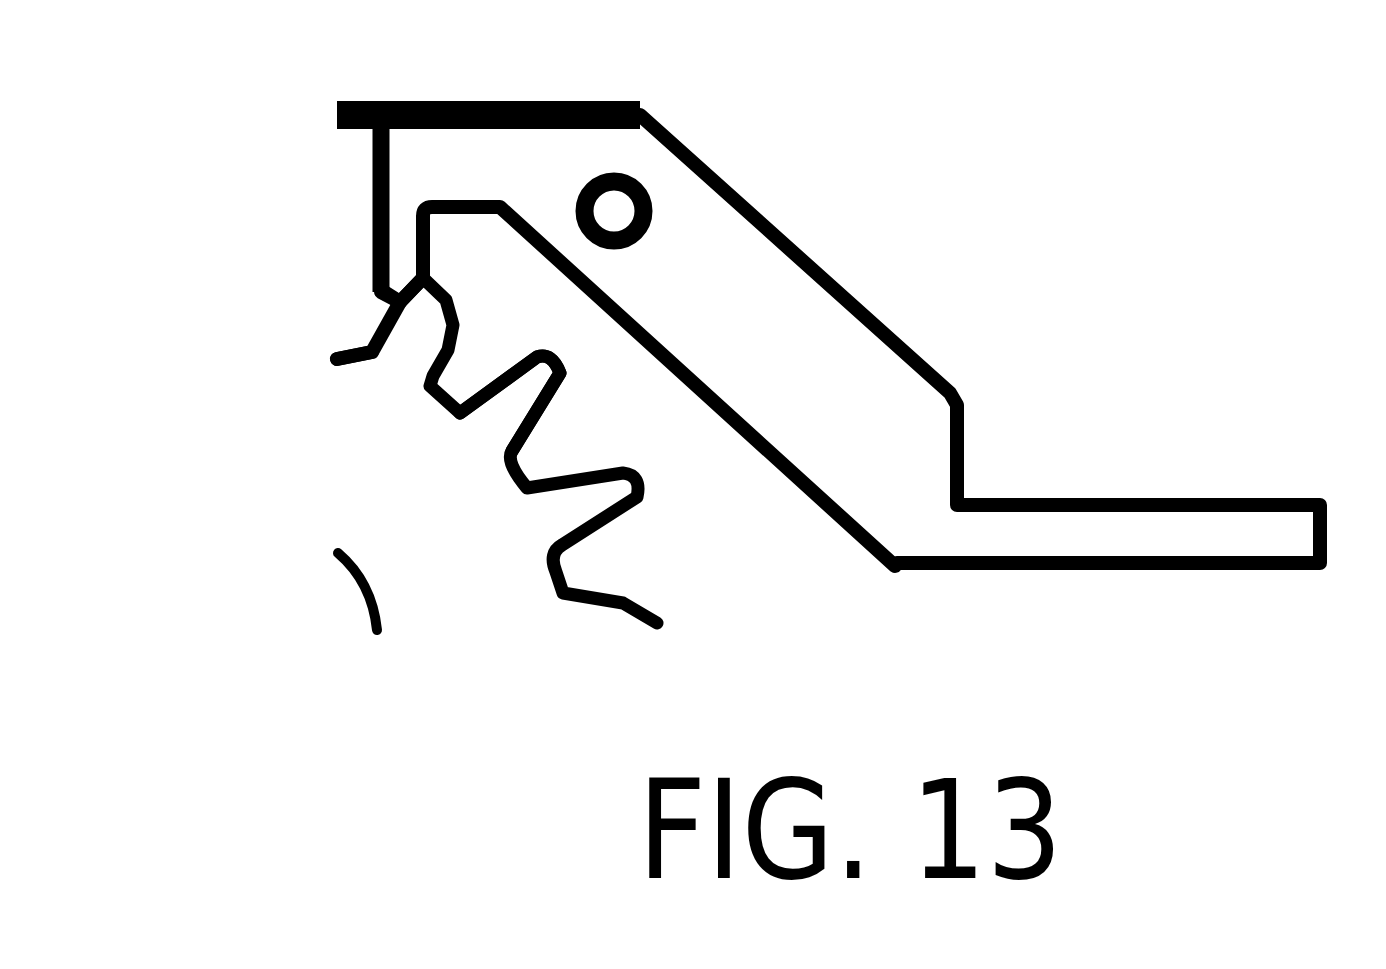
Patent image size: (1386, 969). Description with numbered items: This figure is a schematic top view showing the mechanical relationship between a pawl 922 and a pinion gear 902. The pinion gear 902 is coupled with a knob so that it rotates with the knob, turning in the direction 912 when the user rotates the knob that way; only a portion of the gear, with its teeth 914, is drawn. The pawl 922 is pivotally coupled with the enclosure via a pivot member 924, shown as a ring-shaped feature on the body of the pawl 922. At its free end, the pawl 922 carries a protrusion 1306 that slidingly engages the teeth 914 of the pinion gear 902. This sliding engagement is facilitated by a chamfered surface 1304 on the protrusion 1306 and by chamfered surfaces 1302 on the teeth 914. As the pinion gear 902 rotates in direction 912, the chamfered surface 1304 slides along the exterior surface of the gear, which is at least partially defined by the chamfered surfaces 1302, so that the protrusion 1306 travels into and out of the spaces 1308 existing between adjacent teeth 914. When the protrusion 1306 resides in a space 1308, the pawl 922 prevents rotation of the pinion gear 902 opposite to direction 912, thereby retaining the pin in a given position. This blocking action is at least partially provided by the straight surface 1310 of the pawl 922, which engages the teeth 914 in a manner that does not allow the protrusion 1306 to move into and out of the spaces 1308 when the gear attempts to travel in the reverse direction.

The pawl 922 is at (823, 188).
The pivot member 924 is at (644, 236).
The direction of rotation 912 is at (458, 468).
The pinion gear 902 is at (337, 607).
The teeth 914 is at (368, 334).
The chamfered surfaces of teeth 1302 is at (401, 312).
The chamfered surface of protrusion 1304 is at (393, 284).
The protrusion 1306 is at (335, 188).
The spaces 1308 is at (457, 367).
The straight surface 1310 is at (387, 175).